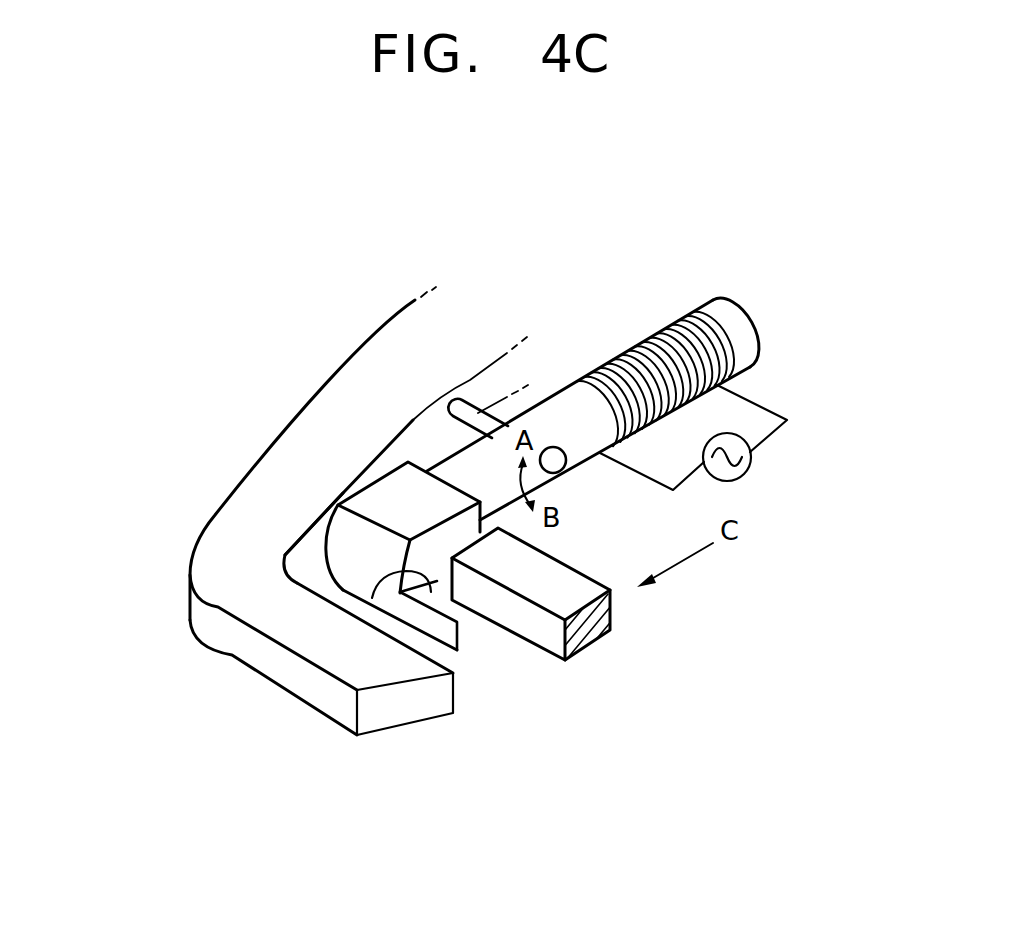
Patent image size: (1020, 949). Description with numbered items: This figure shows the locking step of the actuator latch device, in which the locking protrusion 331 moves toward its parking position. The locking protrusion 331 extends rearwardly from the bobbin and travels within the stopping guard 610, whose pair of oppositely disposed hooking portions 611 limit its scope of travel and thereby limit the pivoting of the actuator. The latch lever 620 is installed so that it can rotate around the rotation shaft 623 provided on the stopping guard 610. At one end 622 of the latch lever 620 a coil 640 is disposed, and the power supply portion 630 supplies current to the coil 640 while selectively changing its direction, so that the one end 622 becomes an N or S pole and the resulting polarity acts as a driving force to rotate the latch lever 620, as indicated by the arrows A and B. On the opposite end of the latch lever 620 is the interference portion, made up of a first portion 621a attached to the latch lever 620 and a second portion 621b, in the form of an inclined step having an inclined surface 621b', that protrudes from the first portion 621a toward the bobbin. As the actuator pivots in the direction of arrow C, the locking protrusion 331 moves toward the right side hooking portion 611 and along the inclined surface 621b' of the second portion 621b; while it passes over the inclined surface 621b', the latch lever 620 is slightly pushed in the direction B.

The stopping guard 610 is at (184, 519).
The hooking portion 611 is at (428, 707).
The latch lever 620 is at (457, 464).
The first portion 621a is at (361, 501).
The second portion 621b is at (478, 662).
The inclined surface 621b' is at (287, 652).
The one end of latch lever 622 is at (740, 320).
The rotation shaft 623 is at (466, 412).
The coil 640 is at (647, 343).
The power supply portion 630 is at (742, 472).
The locking protrusion 331 is at (572, 578).